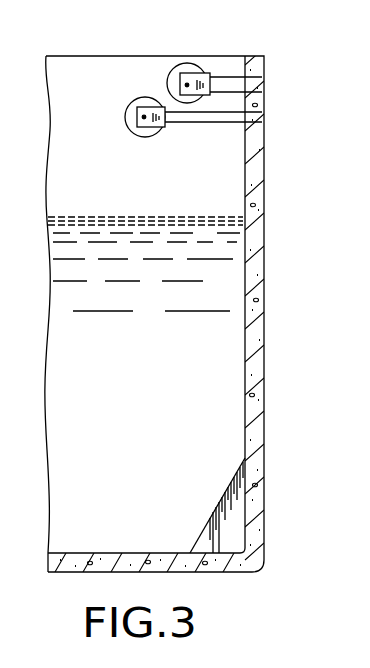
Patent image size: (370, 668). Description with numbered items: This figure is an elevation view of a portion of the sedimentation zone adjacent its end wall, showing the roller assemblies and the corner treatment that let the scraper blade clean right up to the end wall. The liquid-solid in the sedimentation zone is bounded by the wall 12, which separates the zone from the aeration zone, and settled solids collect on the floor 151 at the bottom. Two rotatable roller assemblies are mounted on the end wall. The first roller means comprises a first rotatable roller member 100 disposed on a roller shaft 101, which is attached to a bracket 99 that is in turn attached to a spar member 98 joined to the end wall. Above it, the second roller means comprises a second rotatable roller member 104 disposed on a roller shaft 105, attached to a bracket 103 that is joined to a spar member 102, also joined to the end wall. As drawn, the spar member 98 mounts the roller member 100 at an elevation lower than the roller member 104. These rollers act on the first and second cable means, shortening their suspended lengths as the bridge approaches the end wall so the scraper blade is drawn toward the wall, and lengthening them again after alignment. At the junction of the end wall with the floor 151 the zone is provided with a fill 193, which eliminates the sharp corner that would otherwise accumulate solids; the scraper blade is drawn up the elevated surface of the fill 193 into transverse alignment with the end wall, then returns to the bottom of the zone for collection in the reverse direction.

The wall 12 is at (266, 316).
The spar member 98 is at (240, 121).
The bracket 99 is at (160, 126).
The first rotatable roller member 100 is at (128, 117).
The roller shaft 101 is at (145, 127).
The spar member 102 is at (238, 84).
The bracket 103 is at (209, 75).
The second rotatable roller member 104 is at (168, 78).
The roller shaft 105 is at (189, 84).
The floor 151 is at (68, 565).
The fill 193 is at (233, 520).